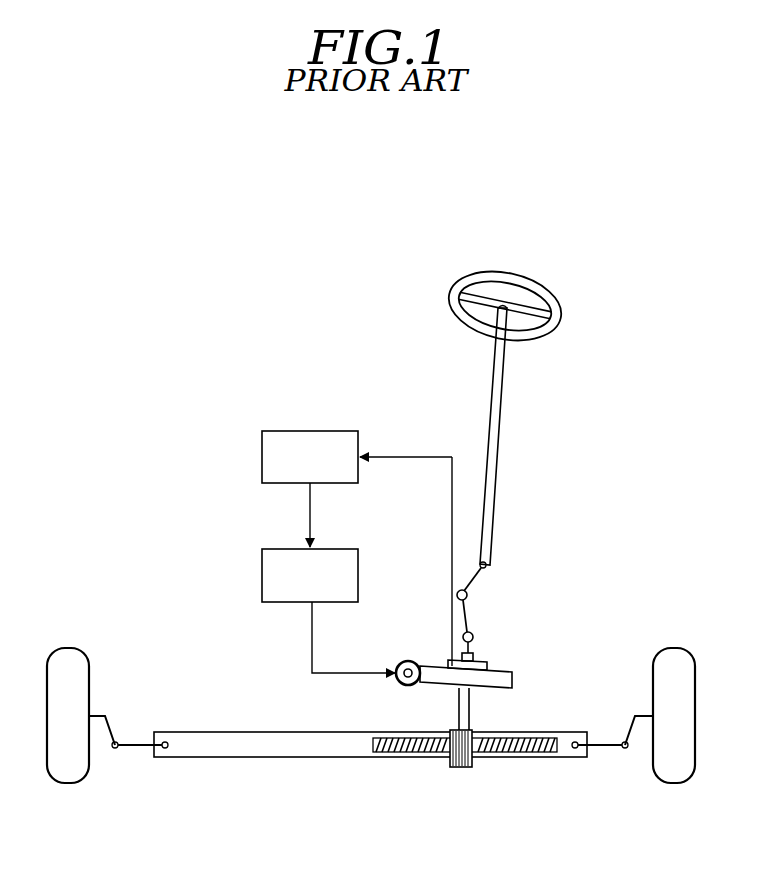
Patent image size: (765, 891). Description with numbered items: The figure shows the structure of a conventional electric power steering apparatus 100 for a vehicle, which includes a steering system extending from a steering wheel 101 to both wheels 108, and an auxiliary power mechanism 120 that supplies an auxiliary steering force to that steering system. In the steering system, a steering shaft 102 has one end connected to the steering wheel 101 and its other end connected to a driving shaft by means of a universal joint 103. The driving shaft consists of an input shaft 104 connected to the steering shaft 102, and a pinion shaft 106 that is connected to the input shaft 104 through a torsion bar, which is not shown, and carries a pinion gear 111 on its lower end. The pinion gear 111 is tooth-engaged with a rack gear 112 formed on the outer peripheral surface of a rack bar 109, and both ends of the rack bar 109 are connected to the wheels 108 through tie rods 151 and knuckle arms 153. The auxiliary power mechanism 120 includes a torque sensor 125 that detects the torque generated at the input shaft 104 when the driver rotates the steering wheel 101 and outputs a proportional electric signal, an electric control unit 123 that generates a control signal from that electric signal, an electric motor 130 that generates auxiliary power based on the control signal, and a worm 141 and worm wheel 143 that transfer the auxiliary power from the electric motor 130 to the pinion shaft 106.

The electric power steering apparatus 100 is at (188, 233).
The steering wheel 101 is at (453, 297).
The steering shaft 102 is at (502, 398).
The universal joint 103 is at (470, 583).
The input shaft 104 is at (473, 650).
The pinion shaft 106 is at (478, 712).
The wheels 108 is at (73, 658).
The rack bar 109 is at (272, 757).
The pinion gear 111 is at (460, 768).
The rack gear 112 is at (525, 755).
The auxiliary power mechanism 120 is at (225, 514).
The electric control unit 123 is at (318, 431).
The torque sensor 125 is at (492, 668).
The electric motor 130 is at (262, 573).
The worm 141 is at (395, 665).
The worm wheel 143 is at (436, 671).
The tie rods 151 is at (135, 742).
The knuckle arms 153 is at (645, 717).